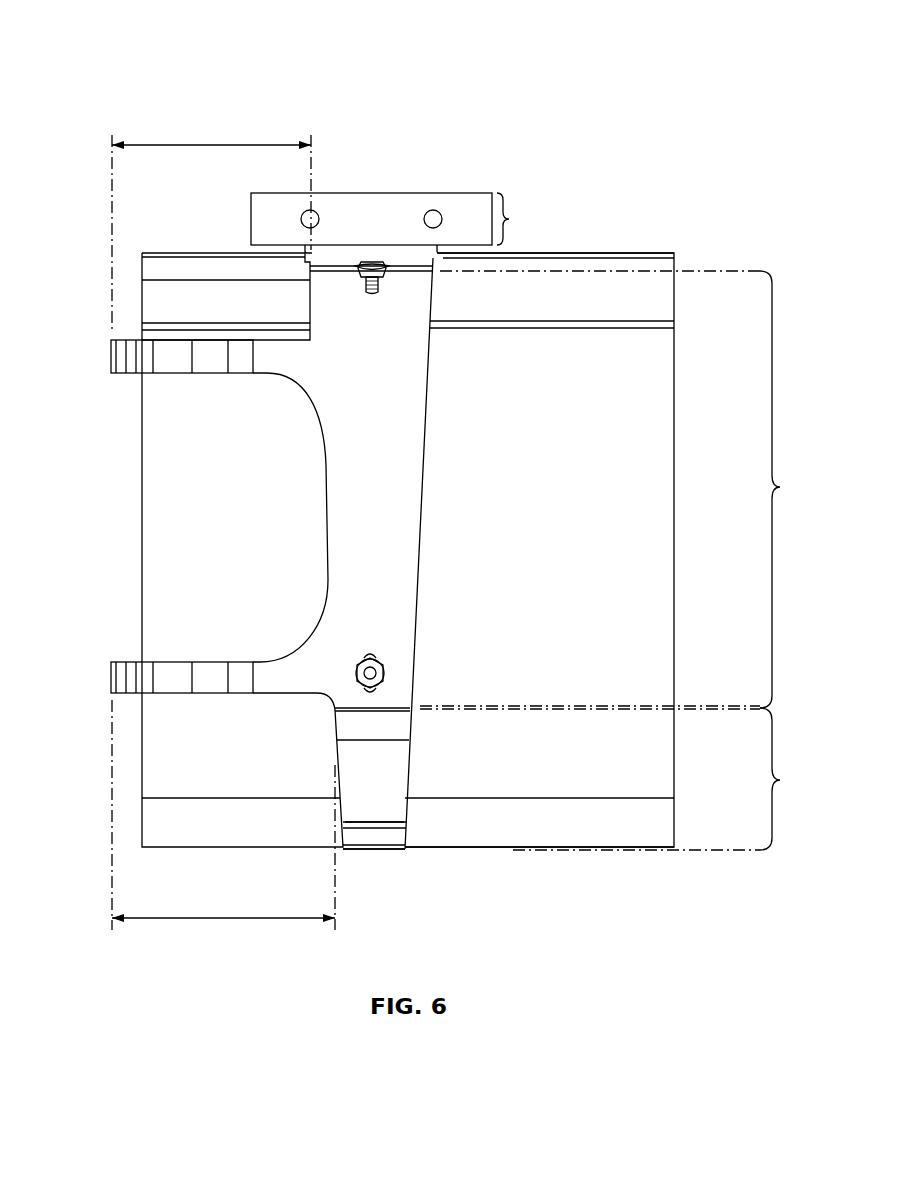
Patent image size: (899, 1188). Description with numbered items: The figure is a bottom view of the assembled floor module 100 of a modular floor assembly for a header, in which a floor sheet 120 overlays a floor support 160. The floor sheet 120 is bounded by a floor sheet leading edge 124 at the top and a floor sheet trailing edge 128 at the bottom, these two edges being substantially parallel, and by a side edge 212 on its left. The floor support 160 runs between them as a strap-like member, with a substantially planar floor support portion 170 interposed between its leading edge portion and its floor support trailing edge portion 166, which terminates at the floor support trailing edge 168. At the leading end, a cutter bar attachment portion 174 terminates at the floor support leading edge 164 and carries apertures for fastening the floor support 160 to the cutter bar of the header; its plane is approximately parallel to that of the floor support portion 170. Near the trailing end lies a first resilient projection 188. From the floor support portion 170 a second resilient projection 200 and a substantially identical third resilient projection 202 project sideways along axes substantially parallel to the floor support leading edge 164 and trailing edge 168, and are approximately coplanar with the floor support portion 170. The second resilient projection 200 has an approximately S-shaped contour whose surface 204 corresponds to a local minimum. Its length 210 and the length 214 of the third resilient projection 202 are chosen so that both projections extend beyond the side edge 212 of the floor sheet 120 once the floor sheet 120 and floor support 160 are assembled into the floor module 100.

The floor module 100 is at (114, 64).
The floor sheet 120 is at (688, 478).
The floor sheet leading edge 124 is at (628, 252).
The floor sheet trailing edge 128 is at (495, 848).
The floor support 160 is at (436, 509).
The floor support leading edge 164 is at (383, 192).
The floor support trailing edge portion 166 is at (794, 779).
The floor support trailing edge 168 is at (372, 852).
The floor support portion 170 is at (796, 489).
The cutter bar attachment portion 174 is at (525, 219).
The first resilient projection 188 is at (392, 812).
The second resilient projection 200 is at (112, 357).
The third resilient projection 202 is at (112, 680).
The surface 204 is at (165, 362).
The length 210 is at (203, 146).
The side edge 212 is at (142, 542).
The length 214 is at (223, 920).